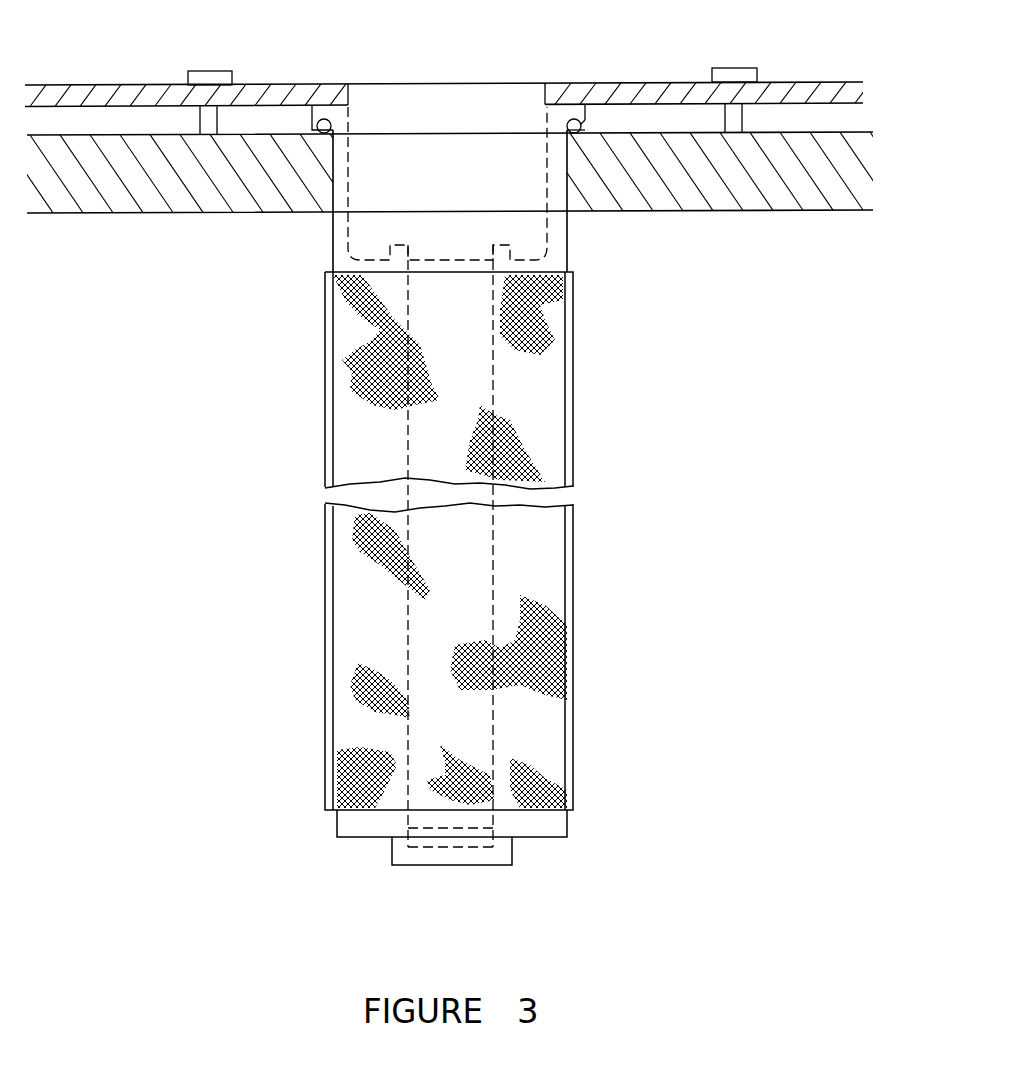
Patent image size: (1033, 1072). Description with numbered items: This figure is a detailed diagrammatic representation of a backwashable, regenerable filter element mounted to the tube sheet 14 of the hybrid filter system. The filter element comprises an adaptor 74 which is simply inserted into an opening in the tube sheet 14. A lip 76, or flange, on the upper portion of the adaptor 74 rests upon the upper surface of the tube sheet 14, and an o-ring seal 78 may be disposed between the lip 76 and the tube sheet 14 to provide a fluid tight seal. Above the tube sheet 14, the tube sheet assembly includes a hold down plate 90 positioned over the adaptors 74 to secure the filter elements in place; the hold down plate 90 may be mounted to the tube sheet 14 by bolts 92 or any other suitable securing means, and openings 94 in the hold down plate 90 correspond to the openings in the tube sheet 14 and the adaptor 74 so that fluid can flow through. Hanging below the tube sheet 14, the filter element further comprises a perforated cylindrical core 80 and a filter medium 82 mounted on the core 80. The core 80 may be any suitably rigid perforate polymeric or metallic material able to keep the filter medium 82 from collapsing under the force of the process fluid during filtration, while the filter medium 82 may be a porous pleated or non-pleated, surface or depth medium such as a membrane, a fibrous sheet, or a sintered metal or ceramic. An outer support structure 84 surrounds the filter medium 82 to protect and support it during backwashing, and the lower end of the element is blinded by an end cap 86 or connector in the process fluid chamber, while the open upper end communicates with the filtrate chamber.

The tube sheet 14 is at (145, 214).
The adaptor 74 is at (458, 175).
The lip 76 is at (586, 120).
The o-ring seal 78 is at (570, 137).
The perforated cylindrical core 80 is at (396, 818).
The filter medium 82 is at (335, 576).
The outer support structure 84 is at (325, 430).
The end cap 86 is at (453, 866).
The hold down plate 90 is at (98, 84).
The bolts 92 is at (202, 71).
The openings 94 is at (453, 82).